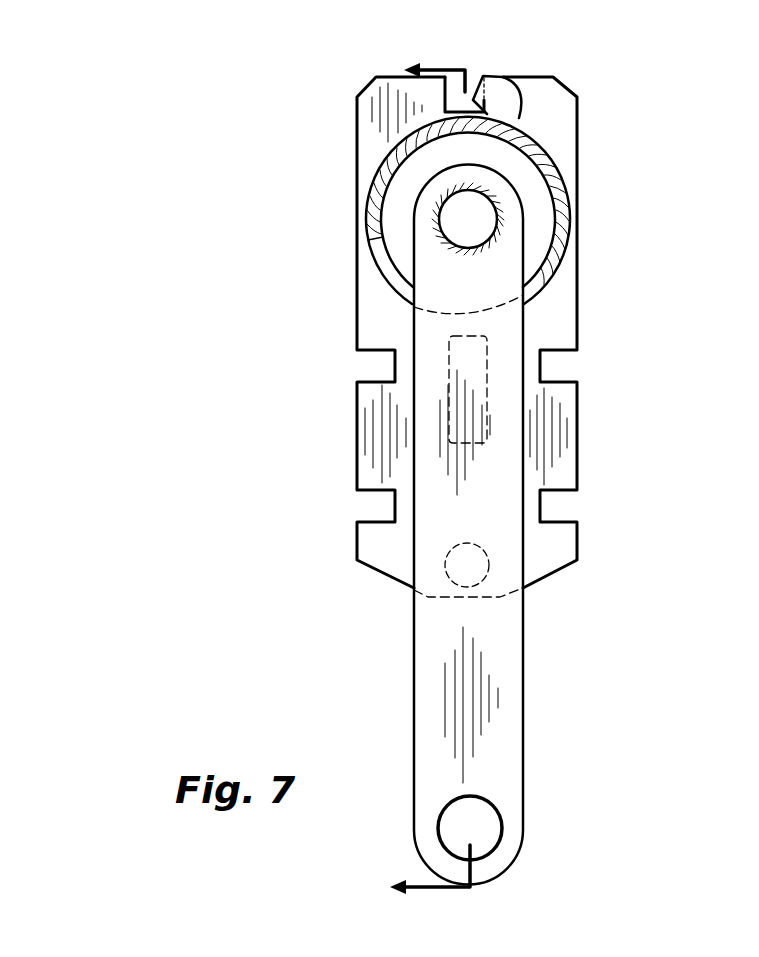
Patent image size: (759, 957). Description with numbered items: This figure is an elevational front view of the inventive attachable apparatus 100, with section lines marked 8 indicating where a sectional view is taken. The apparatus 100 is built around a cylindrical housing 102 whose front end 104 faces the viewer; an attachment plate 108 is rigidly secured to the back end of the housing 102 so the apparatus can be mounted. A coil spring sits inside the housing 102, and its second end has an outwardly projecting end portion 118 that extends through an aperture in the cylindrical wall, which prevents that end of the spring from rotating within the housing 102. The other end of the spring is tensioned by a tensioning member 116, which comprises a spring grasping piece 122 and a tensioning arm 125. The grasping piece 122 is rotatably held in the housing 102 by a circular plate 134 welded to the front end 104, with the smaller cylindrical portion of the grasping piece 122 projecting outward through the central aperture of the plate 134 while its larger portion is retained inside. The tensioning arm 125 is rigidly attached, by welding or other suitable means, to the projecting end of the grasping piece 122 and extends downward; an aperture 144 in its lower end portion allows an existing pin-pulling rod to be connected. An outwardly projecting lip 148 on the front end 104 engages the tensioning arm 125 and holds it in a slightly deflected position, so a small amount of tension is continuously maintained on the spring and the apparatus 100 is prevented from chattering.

The section line 8- 8 is at (427, 470).
The inventive apparatus 100 is at (608, 146).
The cylindrical housing 102 is at (396, 210).
The front end 104 is at (396, 210).
The attachment plate 108 is at (562, 450).
The tensioning member 116 is at (463, 297).
The outwardly projecting end portion 118 is at (495, 83).
The spring grasping piece 122 is at (470, 218).
The tensioning arm 125 is at (512, 347).
The circular plate 134 is at (396, 210).
The aperture 144 is at (482, 812).
The outwardly projecting lip 148 is at (427, 173).